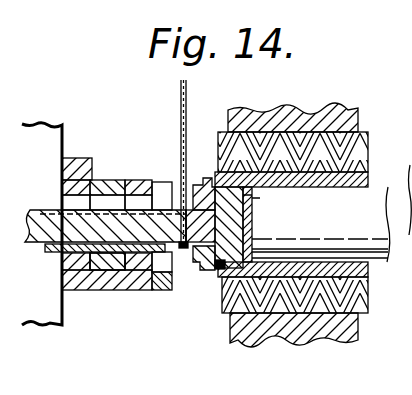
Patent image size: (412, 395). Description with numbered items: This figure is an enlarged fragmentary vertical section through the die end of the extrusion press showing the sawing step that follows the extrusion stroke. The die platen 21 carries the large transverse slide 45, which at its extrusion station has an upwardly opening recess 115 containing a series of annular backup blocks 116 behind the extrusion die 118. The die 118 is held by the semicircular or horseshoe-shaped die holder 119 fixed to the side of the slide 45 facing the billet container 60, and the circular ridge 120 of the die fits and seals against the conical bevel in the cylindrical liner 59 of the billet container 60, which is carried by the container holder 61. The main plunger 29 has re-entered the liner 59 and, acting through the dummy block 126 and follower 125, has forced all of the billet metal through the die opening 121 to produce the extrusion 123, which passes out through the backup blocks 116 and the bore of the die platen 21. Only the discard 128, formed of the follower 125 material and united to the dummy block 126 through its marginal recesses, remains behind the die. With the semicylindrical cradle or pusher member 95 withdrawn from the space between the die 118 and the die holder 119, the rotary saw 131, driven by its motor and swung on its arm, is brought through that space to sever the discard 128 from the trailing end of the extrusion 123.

The die platen 21 is at (48, 125).
The main plunger 29 is at (390, 174).
The annular backup blocks 116 is at (130, 178).
The extrusion 123 is at (48, 210).
The semicylindrical cradle or pusher member 95 is at (46, 251).
The slide 45 is at (85, 292).
The upwardly opening recess 115 is at (118, 282).
The die holder 119 is at (164, 292).
The discard 128 is at (184, 270).
The dummy block 126 is at (244, 196).
The extrusion die 118 is at (218, 271).
The follower 125 is at (244, 216).
The die opening 121 is at (288, 238).
The circular ridge 120 is at (212, 172).
The rotary saw 131 is at (180, 100).
The container holder 61 is at (302, 110).
The billet container 60 is at (360, 128).
The cylindrical liner 59 is at (370, 174).